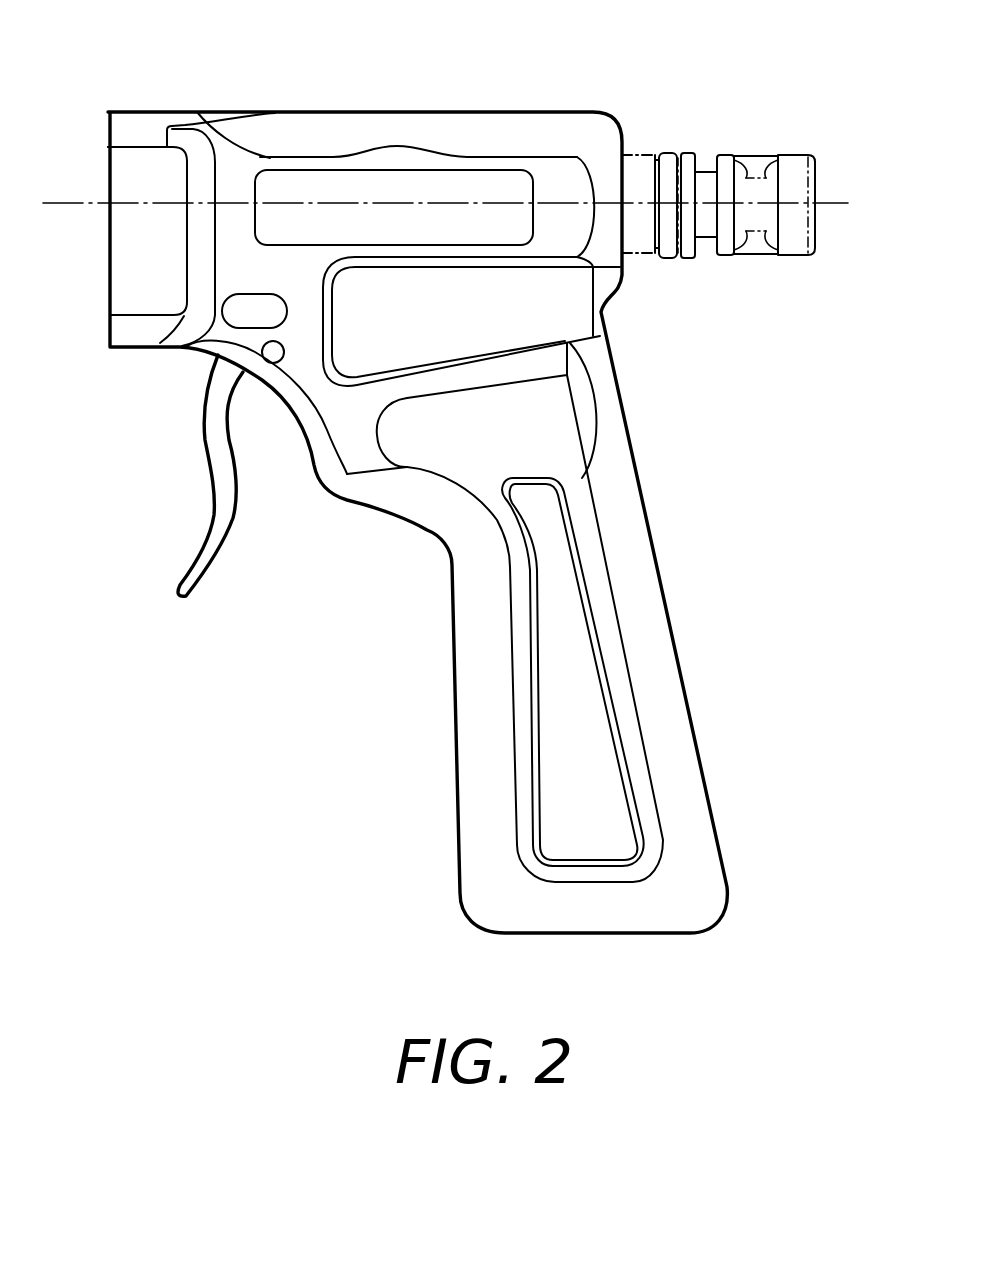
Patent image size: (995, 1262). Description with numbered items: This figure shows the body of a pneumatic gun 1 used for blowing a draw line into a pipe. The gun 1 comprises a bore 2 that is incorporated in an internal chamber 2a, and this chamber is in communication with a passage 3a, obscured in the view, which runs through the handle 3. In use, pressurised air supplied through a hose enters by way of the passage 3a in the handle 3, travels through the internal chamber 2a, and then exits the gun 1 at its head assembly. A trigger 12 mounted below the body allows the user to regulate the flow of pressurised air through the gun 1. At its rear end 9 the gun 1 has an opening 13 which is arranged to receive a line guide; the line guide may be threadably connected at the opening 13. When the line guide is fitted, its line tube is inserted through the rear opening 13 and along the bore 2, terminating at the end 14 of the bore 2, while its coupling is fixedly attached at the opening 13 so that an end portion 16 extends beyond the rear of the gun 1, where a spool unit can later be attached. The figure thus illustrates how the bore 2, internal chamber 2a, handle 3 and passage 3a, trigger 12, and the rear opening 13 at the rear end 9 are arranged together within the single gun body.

The pneumatic gun 1 is at (234, 776).
The bore 2 is at (107, 183).
The internal chamber 2a is at (160, 237).
The handle 3 is at (653, 640).
The passage 3a is at (613, 819).
The rear end 9 is at (614, 107).
The trigger 12 is at (218, 502).
The rear opening 13 is at (618, 178).
The end of bore 14 is at (107, 128).
The end portion 16 is at (792, 160).